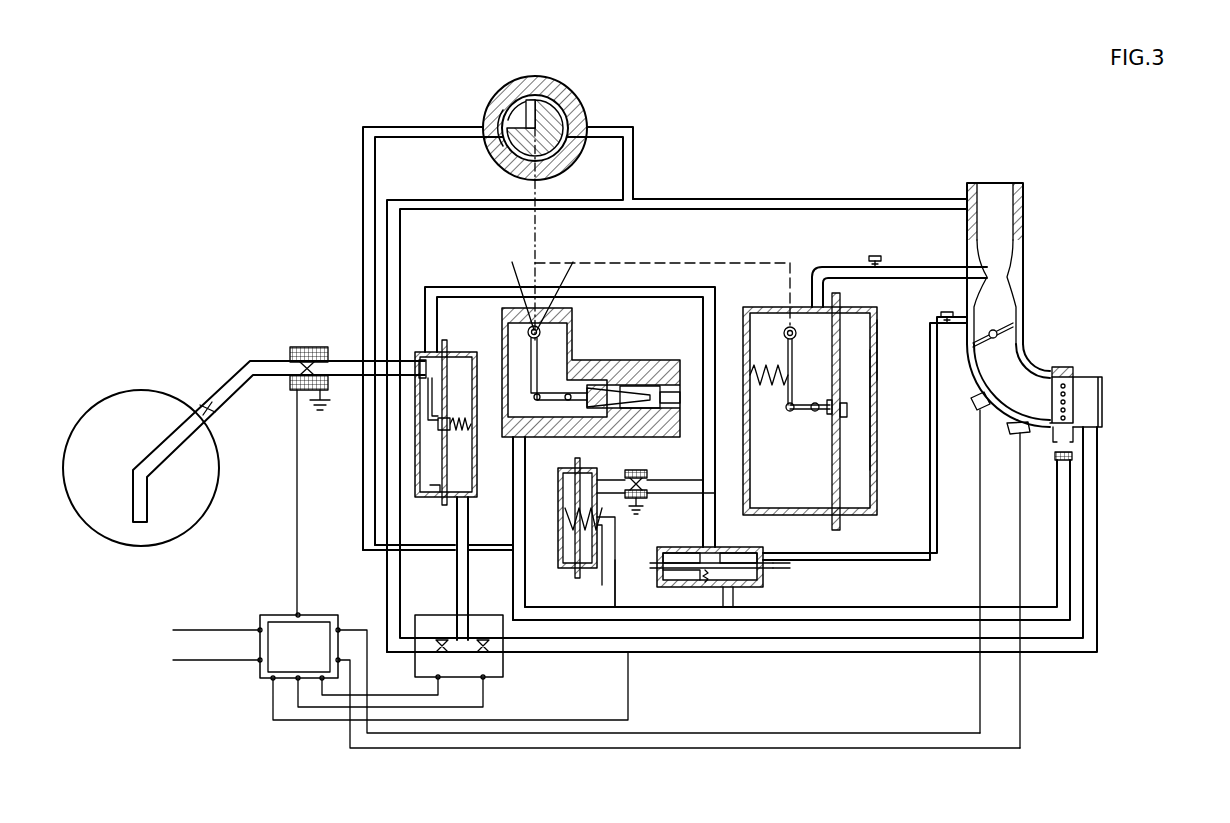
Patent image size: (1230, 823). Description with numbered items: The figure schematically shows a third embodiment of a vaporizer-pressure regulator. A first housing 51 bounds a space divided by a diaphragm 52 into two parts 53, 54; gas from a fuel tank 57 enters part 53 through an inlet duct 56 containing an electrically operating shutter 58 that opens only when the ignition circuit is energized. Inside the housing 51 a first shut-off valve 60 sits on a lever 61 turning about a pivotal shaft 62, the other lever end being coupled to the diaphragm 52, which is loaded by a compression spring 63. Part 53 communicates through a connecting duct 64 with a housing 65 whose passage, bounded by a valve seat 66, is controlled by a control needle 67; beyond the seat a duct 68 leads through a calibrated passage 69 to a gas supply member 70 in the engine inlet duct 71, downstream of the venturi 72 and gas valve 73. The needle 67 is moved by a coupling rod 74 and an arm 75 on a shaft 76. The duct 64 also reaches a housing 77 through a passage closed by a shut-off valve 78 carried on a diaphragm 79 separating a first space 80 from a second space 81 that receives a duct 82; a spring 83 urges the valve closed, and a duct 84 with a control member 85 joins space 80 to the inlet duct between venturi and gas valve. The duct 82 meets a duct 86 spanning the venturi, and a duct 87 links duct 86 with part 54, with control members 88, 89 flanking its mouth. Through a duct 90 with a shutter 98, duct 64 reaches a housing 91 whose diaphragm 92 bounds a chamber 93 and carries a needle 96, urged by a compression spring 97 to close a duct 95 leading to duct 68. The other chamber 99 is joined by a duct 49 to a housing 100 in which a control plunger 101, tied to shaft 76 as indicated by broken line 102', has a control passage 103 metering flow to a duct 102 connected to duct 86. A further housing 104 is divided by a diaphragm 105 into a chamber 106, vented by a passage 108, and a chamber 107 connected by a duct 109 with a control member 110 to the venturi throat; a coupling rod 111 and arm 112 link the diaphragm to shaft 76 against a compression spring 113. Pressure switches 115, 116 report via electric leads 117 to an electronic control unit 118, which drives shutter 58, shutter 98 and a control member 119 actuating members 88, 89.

The duct 49 is at (368, 512).
The first housing 51 is at (455, 352).
The diaphragm 52 is at (445, 340).
The part of space 53 is at (432, 490).
The part of space 54 is at (462, 482).
The inlet duct 56 is at (352, 362).
The fuel tank 57 is at (200, 480).
The electrically operating shutter 58 is at (292, 350).
The first shut-off valve 60 is at (420, 360).
The lever 61 is at (428, 400).
The pivotal shaft 62 is at (322, 397).
The compression spring 63 is at (476, 438).
The connecting duct 64 is at (440, 297).
The housing 65 is at (585, 370).
The valve seat 66 is at (615, 392).
The control needle 67 is at (632, 386).
The duct 68 is at (600, 605).
The calibrated passage 69 is at (1074, 457).
The gas supply member 70 is at (1078, 385).
The inlet duct 71 is at (1005, 215).
The venturi 72 is at (1012, 283).
The gas valve 73 is at (1012, 332).
The coupling rod 74 is at (552, 393).
The arm 75 is at (528, 300).
The shaft 76 is at (788, 327).
The housing 77 is at (765, 552).
The shut-off valve 78 is at (718, 553).
The diaphragm 79 is at (790, 568).
The first space 80 is at (688, 556).
The second space 81 is at (668, 578).
The duct 82 is at (735, 597).
The spring 83 is at (708, 585).
The duct 84 is at (940, 530).
The control member 85 is at (946, 312).
The duct 86 is at (805, 205).
The duct 87 is at (462, 610).
The control member 88 is at (440, 652).
The control member 89 is at (485, 652).
The duct 90 is at (683, 485).
The housing 91 is at (603, 565).
The diaphragm 92 is at (580, 462).
The chamber 93 is at (598, 482).
The duct 95 is at (615, 590).
The needle 96 is at (560, 540).
The compression spring 97 is at (565, 540).
The shutter 98 is at (648, 496).
The chamber 99 is at (575, 468).
The housing 100 is at (548, 86).
The control plunger 101 is at (555, 120).
The duct 102 is at (665, 387).
The broken line 102' is at (622, 270).
The control passage 103 is at (505, 115).
The housing 104 is at (880, 350).
The diaphragm 105 is at (826, 296).
The chamber 106 is at (855, 468).
The chamber 107 is at (810, 411).
The passage 108 is at (876, 400).
The duct 109 is at (822, 270).
The control member 110 is at (874, 256).
The coupling rod 111 is at (803, 410).
The arm 112 is at (795, 395).
The compression spring 113 is at (772, 366).
The pressure switch 115 is at (975, 400).
The pressure switch 116 is at (1012, 435).
The electric lead 117 is at (980, 690).
The electronic control unit 118 is at (258, 672).
The control member 119 is at (490, 678).